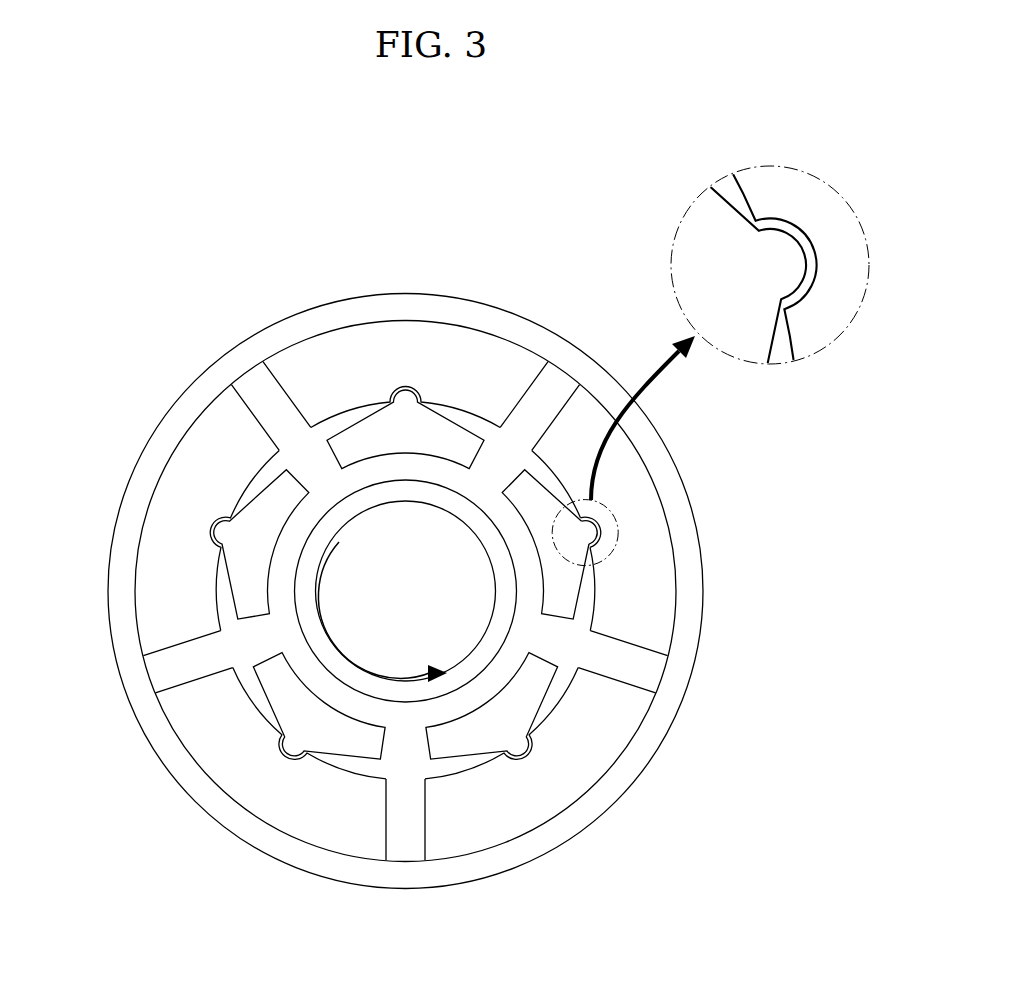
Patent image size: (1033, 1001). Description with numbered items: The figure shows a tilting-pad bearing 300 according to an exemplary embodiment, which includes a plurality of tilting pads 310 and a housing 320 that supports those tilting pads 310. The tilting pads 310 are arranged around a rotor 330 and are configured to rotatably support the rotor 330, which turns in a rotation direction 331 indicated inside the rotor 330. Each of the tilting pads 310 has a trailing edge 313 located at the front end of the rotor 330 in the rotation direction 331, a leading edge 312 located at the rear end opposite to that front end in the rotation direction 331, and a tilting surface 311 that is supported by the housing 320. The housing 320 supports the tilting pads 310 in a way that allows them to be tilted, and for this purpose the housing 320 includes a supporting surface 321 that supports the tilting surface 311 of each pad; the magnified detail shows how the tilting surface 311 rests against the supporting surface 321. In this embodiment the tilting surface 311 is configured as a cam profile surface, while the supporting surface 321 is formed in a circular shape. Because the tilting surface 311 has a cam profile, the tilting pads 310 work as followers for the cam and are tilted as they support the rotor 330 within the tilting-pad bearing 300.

The tilting-pad bearing 300 is at (427, 219).
The tilting pad 310 is at (533, 498).
The tilting surface 311 is at (600, 560).
The leading edge 312 is at (517, 607).
The trailing edge 313 is at (502, 490).
The housing 320 is at (640, 525).
The supporting surface 321 is at (597, 507).
The rotor 330 is at (347, 589).
The rotation direction 331 is at (322, 620).